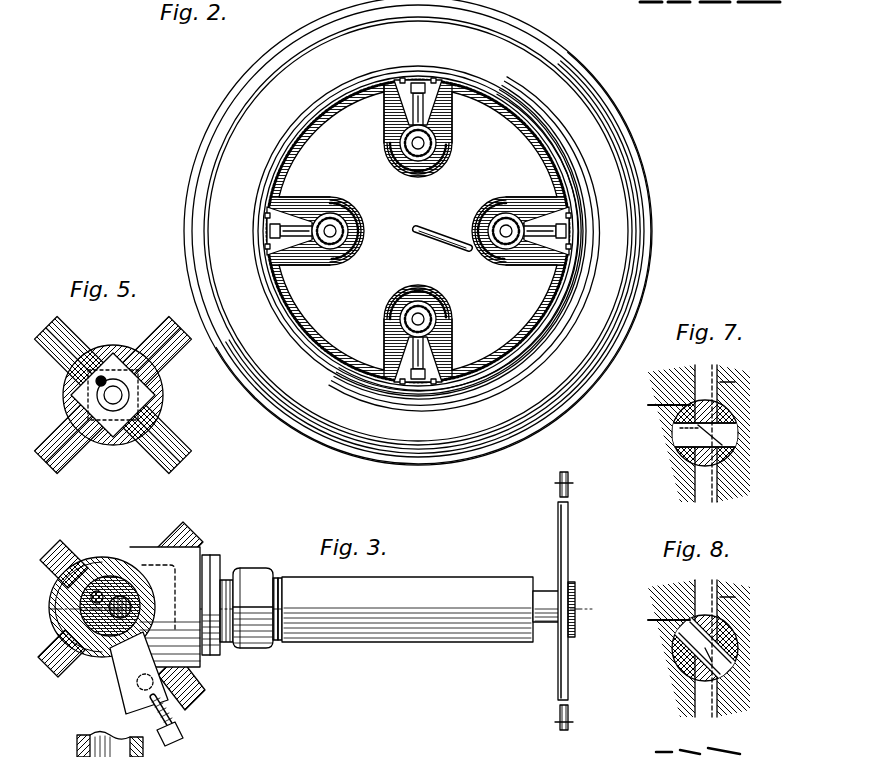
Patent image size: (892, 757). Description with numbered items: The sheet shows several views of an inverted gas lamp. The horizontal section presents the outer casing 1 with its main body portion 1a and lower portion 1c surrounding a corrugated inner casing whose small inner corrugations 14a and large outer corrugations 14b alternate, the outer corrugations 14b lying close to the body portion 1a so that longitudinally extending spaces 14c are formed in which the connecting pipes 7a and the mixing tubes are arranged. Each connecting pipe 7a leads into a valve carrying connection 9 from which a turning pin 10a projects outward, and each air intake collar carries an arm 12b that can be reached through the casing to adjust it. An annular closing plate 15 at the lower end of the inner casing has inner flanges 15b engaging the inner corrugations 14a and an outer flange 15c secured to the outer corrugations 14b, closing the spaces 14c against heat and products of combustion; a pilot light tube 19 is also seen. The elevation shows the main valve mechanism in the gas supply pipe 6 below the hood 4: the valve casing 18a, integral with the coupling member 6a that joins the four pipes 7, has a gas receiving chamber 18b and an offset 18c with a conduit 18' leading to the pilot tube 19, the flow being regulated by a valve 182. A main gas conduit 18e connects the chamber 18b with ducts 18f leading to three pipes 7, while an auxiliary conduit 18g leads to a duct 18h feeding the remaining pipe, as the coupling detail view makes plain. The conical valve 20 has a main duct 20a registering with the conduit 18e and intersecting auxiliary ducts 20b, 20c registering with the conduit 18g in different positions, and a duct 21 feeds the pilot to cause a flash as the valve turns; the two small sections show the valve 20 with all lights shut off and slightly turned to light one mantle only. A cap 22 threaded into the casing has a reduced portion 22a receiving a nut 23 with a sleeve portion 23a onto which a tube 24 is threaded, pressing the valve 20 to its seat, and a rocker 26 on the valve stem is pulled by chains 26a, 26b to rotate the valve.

In FIG. 2, the outer casing 1 is at (198, 142).
In FIG. 2, the main body portion 1a is at (398, 78).
In FIG. 2, the lower portion 1c is at (630, 185).
In FIG. 5, the pipes 7 is at (135, 335).
In FIG. 3, the pipes 7 is at (70, 548).
In FIG. 2, the connecting pipe 7a is at (437, 146).
In FIG. 2, the valve carrying connection 9 is at (345, 235).
In FIG. 2, the turning pin 10a is at (440, 82).
In FIG. 2, the arm 12b is at (405, 85).
In FIG. 2, the inner corrugations 14a is at (362, 212).
In FIG. 2, the outer corrugations 14b is at (355, 103).
In FIG. 2, the longitudinal spaces 14c is at (355, 190).
In FIG. 2, the closing plate 15 is at (270, 190).
In FIG. 2, the inner flanges 15b is at (443, 160).
In FIG. 2, the outer flange 15c is at (362, 370).
In FIG. 2, the pilot light tube 19 is at (448, 245).
In FIG. 3, the hood 4 is at (319, 609).
In FIG. 3, the gas supply pipe 6 is at (108, 590).
In FIG. 5, the coupling member 6a is at (153, 400).
In FIG. 7, the valve casing 18a is at (685, 385).
In FIG. 8, the valve casing 18a is at (685, 598).
In FIG. 3, the valve casing 18a is at (120, 565).
In FIG. 3, the gas receiving chamber 18b is at (105, 632).
In FIG. 3, the offset 18c is at (118, 690).
In FIG. 3, the conduit 18' is at (124, 700).
In FIG. 3, the valve 182 is at (183, 724).
In FIG. 7, the main gas conduit 18e is at (735, 382).
In FIG. 8, the main gas conduit 18e is at (735, 597).
In FIG. 3, the main gas conduit 18e is at (140, 590).
In FIG. 5, the ducts 18f is at (153, 388).
In FIG. 7, the auxiliary conduit 18g is at (722, 372).
In FIG. 8, the auxiliary conduit 18g is at (722, 587).
In FIG. 3, the auxiliary conduit 18g is at (97, 590).
In FIG. 5, the duct 18h is at (78, 395).
In FIG. 7, the valve 20 is at (680, 450).
In FIG. 8, the valve 20 is at (680, 672).
In FIG. 7, the main duct 20a is at (680, 440).
In FIG. 8, the main duct 20a is at (680, 660).
In FIG. 3, the main duct 20a is at (545, 591).
In FIG. 7, the auxiliary duct 20b is at (738, 437).
In FIG. 8, the auxiliary duct 20b is at (740, 655).
In FIG. 7, the auxiliary duct 20c is at (680, 428).
In FIG. 8, the auxiliary duct 20c is at (735, 628).
In FIG. 7, the duct 21 is at (656, 403).
In FIG. 8, the duct 21 is at (656, 627).
In FIG. 3, the cap 22 is at (226, 578).
In FIG. 3, the reduced portion 22a is at (262, 578).
In FIG. 3, the nut 23 is at (258, 650).
In FIG. 3, the sleeve portion 23a is at (281, 646).
In FIG. 3, the tube 24 is at (412, 590).
In FIG. 3, the rocker 26 is at (570, 578).
In FIG. 3, the chain 26a is at (573, 486).
In FIG. 3, the chain 26b is at (573, 723).